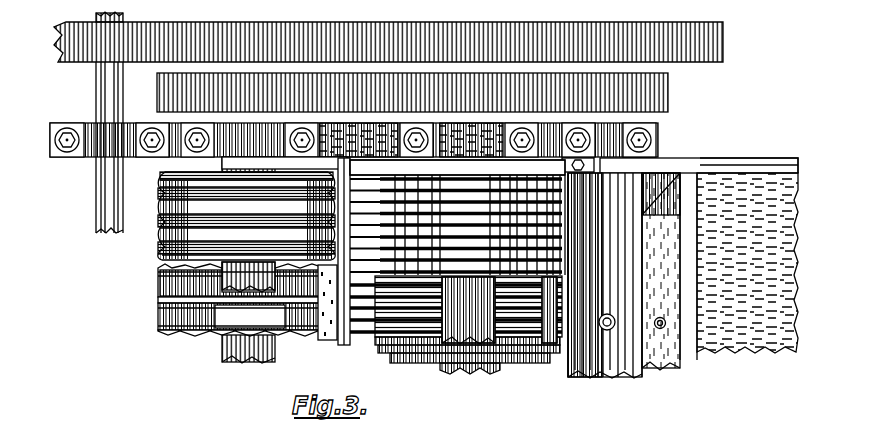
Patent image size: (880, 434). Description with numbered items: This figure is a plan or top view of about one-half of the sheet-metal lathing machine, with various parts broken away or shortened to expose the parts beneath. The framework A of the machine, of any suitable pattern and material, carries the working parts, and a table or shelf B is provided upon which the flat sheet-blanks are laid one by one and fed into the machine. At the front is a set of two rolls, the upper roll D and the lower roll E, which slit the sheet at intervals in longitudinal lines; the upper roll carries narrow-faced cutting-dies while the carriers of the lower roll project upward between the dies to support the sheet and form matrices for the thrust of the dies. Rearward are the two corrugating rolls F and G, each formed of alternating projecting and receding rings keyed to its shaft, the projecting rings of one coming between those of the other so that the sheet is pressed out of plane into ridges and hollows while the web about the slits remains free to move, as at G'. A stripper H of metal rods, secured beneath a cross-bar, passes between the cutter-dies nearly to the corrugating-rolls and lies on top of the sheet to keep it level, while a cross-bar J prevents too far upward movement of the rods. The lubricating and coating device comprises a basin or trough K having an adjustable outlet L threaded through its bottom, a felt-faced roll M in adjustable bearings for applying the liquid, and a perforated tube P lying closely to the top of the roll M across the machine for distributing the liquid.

The framework A is at (160, 174).
The table or shelf B is at (738, 350).
The shaft C is at (109, 147).
The upper roll D is at (390, 181).
The lower roll E is at (456, 335).
The shaft E' is at (528, 337).
The rear corrugating roll F is at (160, 236).
The rear corrugating roll G is at (233, 282).
The free space G' is at (229, 330).
The stripper H is at (350, 336).
The cross-bar J is at (327, 340).
The basin or trough K is at (677, 266).
The adjustable outlet L is at (660, 329).
The roll M is at (647, 238).
The tube P is at (607, 345).